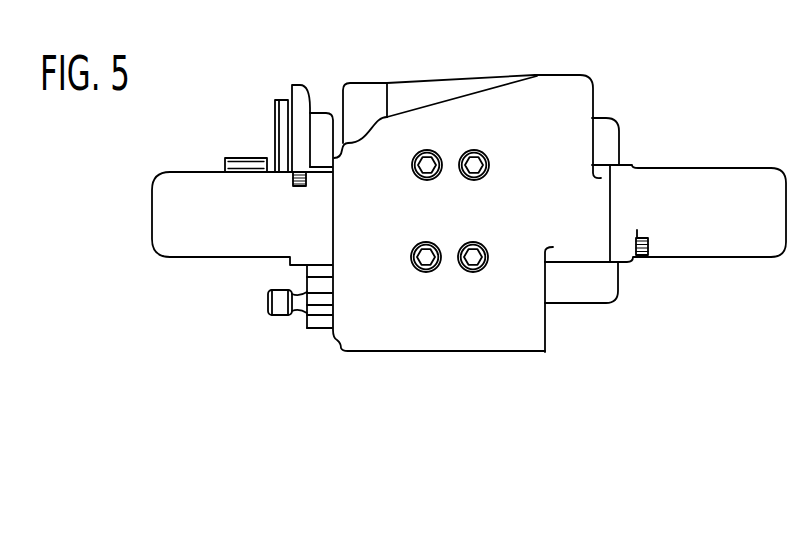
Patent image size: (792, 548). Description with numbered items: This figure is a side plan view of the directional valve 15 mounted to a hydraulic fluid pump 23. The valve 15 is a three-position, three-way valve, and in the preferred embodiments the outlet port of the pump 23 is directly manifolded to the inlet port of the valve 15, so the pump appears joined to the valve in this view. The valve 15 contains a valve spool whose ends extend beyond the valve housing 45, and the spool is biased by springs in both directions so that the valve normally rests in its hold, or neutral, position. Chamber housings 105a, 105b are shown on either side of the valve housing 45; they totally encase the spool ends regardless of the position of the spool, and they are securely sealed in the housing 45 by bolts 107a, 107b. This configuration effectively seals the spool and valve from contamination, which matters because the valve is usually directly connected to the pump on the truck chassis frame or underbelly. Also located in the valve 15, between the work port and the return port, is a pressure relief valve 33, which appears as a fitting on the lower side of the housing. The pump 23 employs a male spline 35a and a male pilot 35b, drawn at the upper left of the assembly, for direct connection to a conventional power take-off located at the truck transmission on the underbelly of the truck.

The directional valve 15 is at (466, 358).
The pump 23 is at (376, 82).
The pressure relief valve 33 is at (268, 302).
The male spline 35a is at (230, 158).
The male pilot 35b is at (273, 102).
The valve housing 45 is at (415, 352).
The chamber housing 105a is at (150, 183).
The chamber housing 105b is at (705, 145).
The bolt 107a is at (293, 183).
The bolt 107b is at (650, 250).